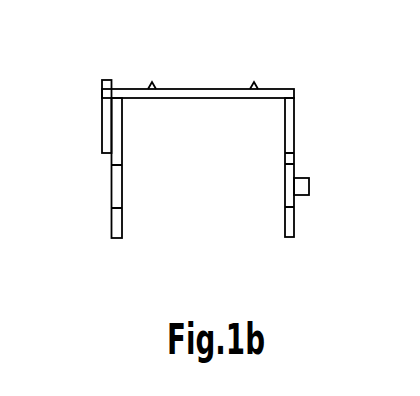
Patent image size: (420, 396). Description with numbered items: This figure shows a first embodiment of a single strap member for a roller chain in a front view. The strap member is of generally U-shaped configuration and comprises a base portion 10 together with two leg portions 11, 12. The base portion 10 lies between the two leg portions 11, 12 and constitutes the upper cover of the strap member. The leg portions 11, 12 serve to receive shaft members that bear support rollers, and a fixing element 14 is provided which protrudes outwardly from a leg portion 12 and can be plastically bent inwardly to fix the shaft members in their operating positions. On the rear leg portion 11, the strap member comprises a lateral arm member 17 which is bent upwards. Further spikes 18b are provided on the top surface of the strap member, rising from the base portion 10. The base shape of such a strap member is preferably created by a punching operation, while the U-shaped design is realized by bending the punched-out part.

The base portion 10 is at (205, 93).
The leg portion 11 is at (117, 238).
The leg portion 12 is at (291, 238).
The fixing element 14 is at (305, 190).
The lateral arm member 17 is at (108, 103).
The spikes 18b is at (150, 82).